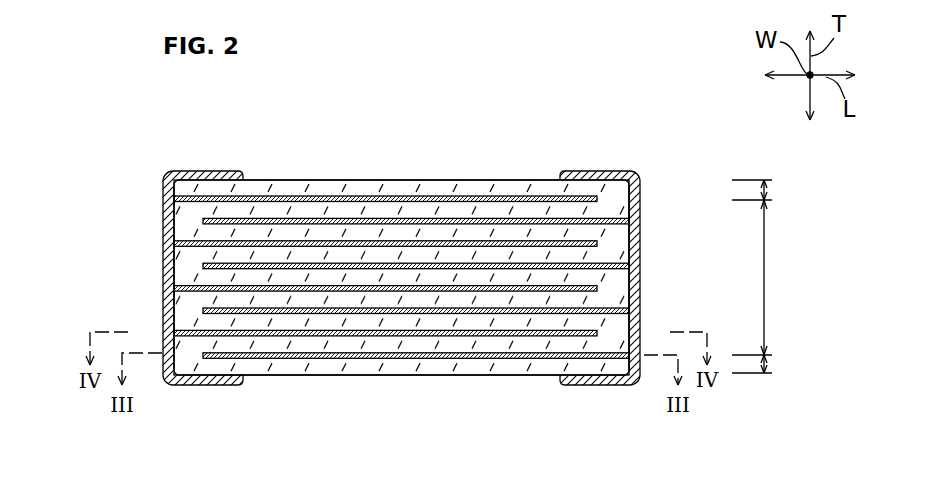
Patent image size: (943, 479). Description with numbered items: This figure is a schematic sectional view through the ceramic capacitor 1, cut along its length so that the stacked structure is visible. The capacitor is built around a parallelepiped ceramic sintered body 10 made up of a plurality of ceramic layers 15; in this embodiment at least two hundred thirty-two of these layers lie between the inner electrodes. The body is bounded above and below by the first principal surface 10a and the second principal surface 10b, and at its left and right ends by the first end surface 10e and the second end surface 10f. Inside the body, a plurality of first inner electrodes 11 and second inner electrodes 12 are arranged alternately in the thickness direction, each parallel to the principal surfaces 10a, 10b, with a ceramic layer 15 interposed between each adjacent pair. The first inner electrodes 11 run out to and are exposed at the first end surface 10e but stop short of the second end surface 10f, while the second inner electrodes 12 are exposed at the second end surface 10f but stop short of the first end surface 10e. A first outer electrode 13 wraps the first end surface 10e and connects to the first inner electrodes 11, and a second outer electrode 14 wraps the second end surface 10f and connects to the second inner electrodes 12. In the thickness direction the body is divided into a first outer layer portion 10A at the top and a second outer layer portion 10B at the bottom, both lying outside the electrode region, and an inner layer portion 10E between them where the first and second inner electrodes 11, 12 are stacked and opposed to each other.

The ceramic capacitor 1 is at (598, 135).
The ceramic sintered body 10 is at (278, 171).
The first principal surface 10a is at (392, 180).
The second principal surface 10b is at (382, 375).
The first end surface 10e is at (174, 232).
The second end surface 10f is at (633, 232).
The first outer layer portion 10A is at (772, 188).
The second outer layer portion 10B is at (772, 364).
The inner layer portion 10E is at (788, 277).
The first inner electrode 11 is at (507, 196).
The second inner electrode 12 is at (602, 220).
The first outer electrode 13 is at (166, 290).
The second outer electrode 14 is at (638, 288).
The ceramic layer 15 is at (295, 342).